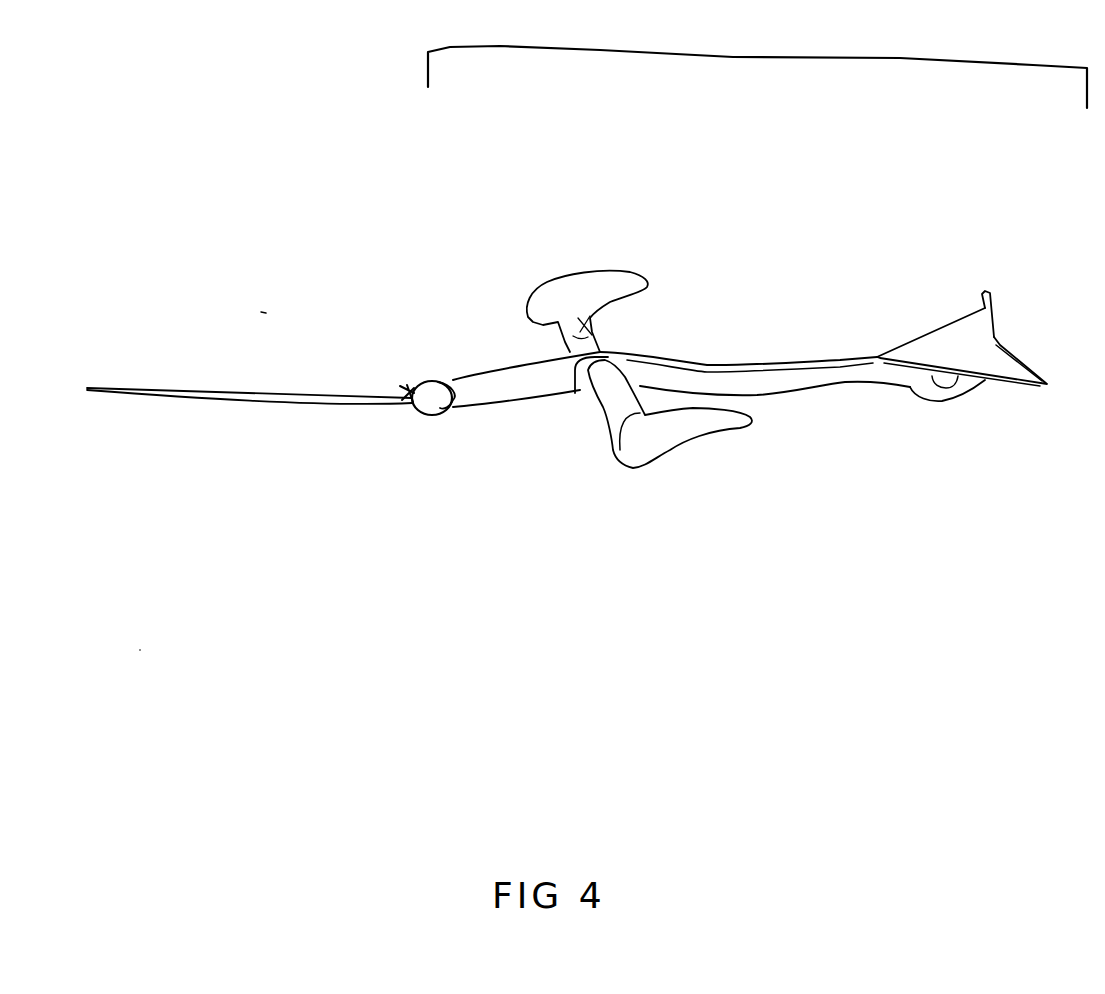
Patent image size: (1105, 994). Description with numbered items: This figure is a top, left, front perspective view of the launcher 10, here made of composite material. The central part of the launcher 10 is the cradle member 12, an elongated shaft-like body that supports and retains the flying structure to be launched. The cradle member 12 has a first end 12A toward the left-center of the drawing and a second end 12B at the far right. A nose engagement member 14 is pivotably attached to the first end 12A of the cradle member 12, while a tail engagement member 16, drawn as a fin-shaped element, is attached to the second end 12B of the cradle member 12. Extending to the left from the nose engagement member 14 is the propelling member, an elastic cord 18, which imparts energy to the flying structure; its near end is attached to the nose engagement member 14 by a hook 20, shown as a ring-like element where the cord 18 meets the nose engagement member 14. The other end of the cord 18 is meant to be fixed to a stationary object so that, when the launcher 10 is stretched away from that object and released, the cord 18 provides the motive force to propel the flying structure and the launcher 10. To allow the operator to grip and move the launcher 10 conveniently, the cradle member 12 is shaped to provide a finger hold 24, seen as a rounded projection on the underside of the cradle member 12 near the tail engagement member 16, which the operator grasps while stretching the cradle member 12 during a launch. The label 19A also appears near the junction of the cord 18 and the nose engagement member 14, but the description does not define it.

The launcher 10 is at (757, 55).
The cradle member 12 is at (775, 363).
The first end 12A is at (620, 350).
The second end 12B is at (983, 308).
The nose engagement member 14 is at (603, 403).
The tail engagement member 16 is at (1012, 345).
The elastic cord 18 is at (168, 388).
The wing blade attachment end 19A is at (388, 398).
The hook 20 is at (422, 416).
The finger hold 24 is at (942, 387).